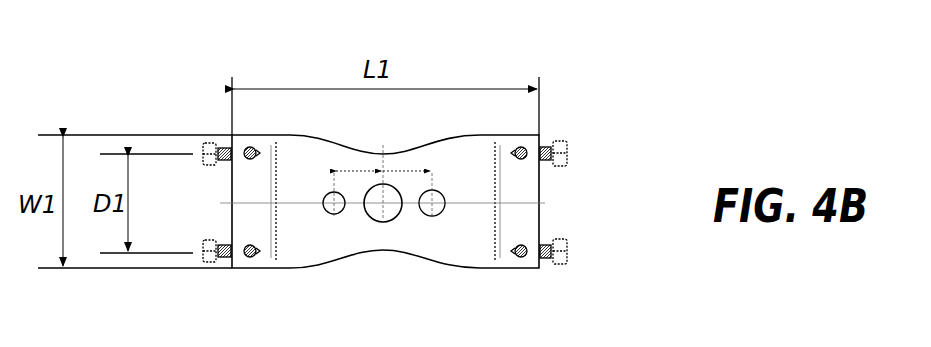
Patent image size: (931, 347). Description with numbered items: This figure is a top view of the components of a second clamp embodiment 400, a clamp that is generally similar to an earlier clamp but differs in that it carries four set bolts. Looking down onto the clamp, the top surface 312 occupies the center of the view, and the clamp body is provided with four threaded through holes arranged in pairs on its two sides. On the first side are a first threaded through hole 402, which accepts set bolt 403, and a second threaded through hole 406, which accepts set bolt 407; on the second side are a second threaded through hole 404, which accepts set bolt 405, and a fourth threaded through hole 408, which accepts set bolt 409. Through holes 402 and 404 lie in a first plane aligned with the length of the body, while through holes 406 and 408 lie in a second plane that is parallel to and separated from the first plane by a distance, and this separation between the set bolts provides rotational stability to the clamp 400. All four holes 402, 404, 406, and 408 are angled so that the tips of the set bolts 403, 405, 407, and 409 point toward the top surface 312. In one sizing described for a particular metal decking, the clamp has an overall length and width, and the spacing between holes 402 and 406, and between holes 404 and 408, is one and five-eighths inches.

The second clamp embodiment 400 is at (185, 63).
The top surface 312 is at (477, 250).
The first threaded through hole 402 is at (247, 259).
The second threaded through hole 404 is at (524, 259).
The second threaded through hole 406 is at (246, 146).
The fourth threaded through hole 408 is at (525, 146).
The set bolt 403 is at (226, 264).
The set bolt 405 is at (545, 263).
The set bolt 407 is at (226, 163).
The set bolt 409 is at (545, 165).